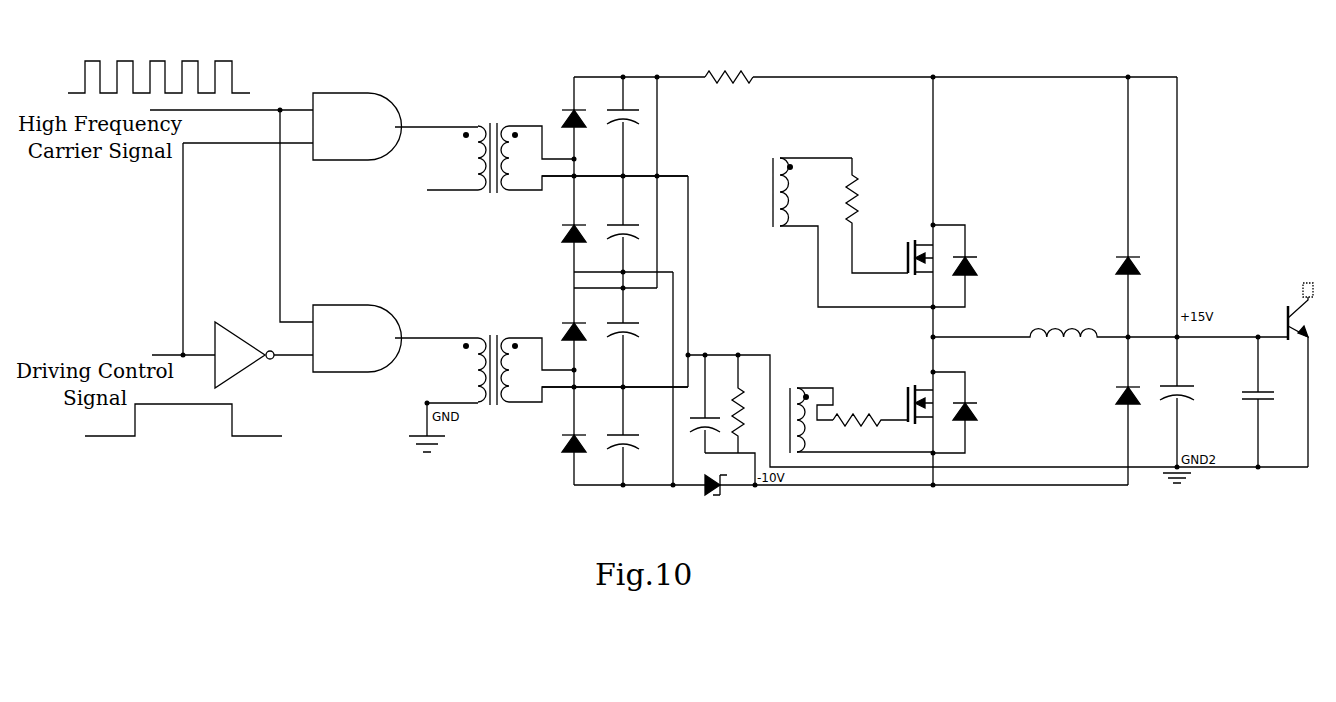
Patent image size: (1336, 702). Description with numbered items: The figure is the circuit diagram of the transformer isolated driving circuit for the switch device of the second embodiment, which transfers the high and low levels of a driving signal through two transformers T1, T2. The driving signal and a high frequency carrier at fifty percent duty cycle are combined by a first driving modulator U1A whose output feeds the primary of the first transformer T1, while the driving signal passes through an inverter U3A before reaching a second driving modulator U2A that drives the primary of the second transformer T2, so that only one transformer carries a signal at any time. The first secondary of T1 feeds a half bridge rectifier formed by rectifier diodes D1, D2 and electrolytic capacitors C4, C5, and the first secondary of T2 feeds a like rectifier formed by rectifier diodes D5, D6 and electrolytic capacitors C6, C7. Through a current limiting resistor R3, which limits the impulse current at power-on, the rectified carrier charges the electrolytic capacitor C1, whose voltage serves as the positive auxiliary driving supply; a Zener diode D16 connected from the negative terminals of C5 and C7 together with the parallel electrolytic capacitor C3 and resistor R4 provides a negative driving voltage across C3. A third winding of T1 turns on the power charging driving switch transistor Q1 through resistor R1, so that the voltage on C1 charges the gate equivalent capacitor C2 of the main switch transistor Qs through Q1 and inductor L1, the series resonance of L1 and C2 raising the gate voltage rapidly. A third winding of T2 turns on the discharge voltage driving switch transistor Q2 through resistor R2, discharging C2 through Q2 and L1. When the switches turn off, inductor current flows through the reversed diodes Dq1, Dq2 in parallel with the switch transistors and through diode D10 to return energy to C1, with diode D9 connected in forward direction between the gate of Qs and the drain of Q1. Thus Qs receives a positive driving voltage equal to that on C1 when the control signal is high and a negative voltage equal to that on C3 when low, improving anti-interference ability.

The first driving modulator U1A is at (386, 117).
The second driving modulator U2A is at (386, 329).
The inverter U3A is at (253, 355).
The first transformer T1 is at (680, 208).
The second transformer T2 is at (680, 387).
The rectifier diode D1 is at (564, 111).
The rectifier diode D2 is at (564, 226).
The rectifier diode D5 is at (564, 323).
The rectifier diode D6 is at (564, 436).
The electrolytic capacitor C4 is at (632, 126).
The electrolytic capacitor C5 is at (632, 232).
The electrolytic capacitor C6 is at (632, 337).
The electrolytic capacitor C7 is at (632, 436).
The electrolytic capacitor C3 is at (703, 404).
The resistor R4 is at (733, 404).
The Zener diode D16 is at (700, 497).
The current limiting resistor R3 is at (729, 64).
The resistor R1 is at (877, 215).
The resistor R2 is at (870, 412).
The power charging driving switch transistor Q1 is at (909, 250).
The discharge voltage driving switch transistor Q2 is at (908, 398).
The reversed diode Dq1 is at (971, 266).
The reversed diode Dq2 is at (971, 412).
The inductor L1 is at (1110, 321).
The diode D9 is at (1118, 258).
The diode D10 is at (1118, 388).
The electrolytic capacitor C1 is at (1186, 386).
The equivalent capacitor C2 is at (1268, 402).
The main switch transistor Qs is at (1287, 375).